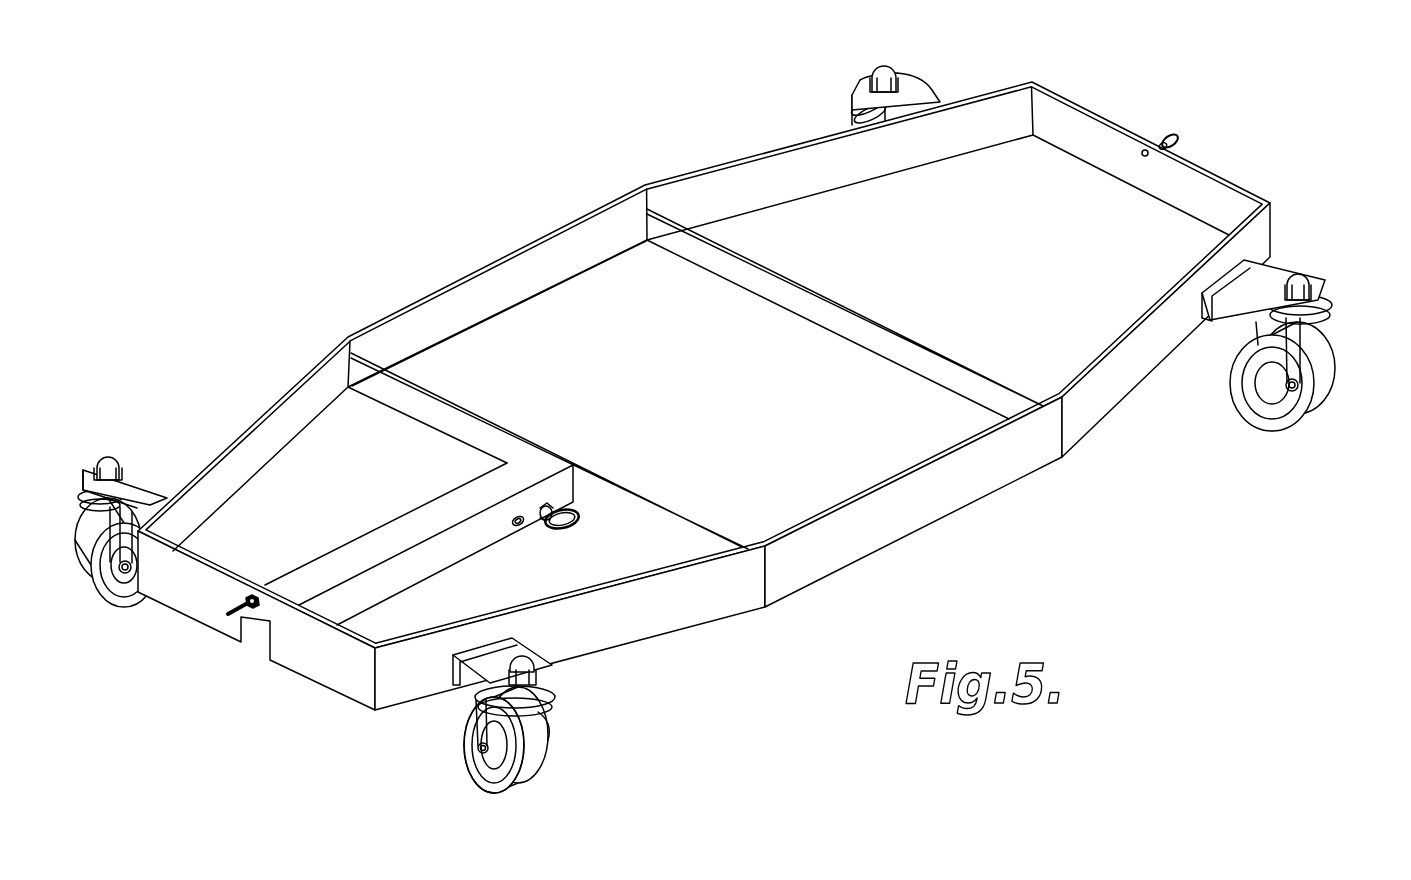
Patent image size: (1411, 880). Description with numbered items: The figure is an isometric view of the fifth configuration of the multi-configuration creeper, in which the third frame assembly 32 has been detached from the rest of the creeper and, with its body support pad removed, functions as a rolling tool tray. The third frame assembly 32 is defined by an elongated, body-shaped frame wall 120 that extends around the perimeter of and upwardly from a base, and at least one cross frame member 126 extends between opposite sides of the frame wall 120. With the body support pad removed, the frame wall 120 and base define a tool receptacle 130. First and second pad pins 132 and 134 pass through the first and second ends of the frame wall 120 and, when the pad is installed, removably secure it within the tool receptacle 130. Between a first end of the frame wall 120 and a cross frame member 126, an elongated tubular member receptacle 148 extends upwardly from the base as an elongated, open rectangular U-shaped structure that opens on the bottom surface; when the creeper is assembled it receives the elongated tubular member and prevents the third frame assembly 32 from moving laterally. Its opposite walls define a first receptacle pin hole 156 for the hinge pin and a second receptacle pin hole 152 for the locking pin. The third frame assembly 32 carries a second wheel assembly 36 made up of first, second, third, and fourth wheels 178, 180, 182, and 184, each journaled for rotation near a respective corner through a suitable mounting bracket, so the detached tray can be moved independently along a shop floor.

The third frame assembly 32 is at (410, 122).
The second wheel assembly 36 is at (466, 772).
The frame wall 120 is at (873, 455).
The cross frame member 126 is at (405, 392).
The tool receptacle 130 is at (563, 318).
The first pad pin 132 is at (224, 613).
The second pad pin 134 is at (1162, 147).
The elongated tubular member receptacle 148 is at (387, 535).
The second receptacle pin hole 152 is at (521, 530).
The first receptacle pin hole 156 is at (578, 525).
The first wheel 178 is at (1317, 347).
The second wheel 180 is at (527, 788).
The third wheel 182 is at (918, 90).
The fourth wheel 184 is at (104, 556).